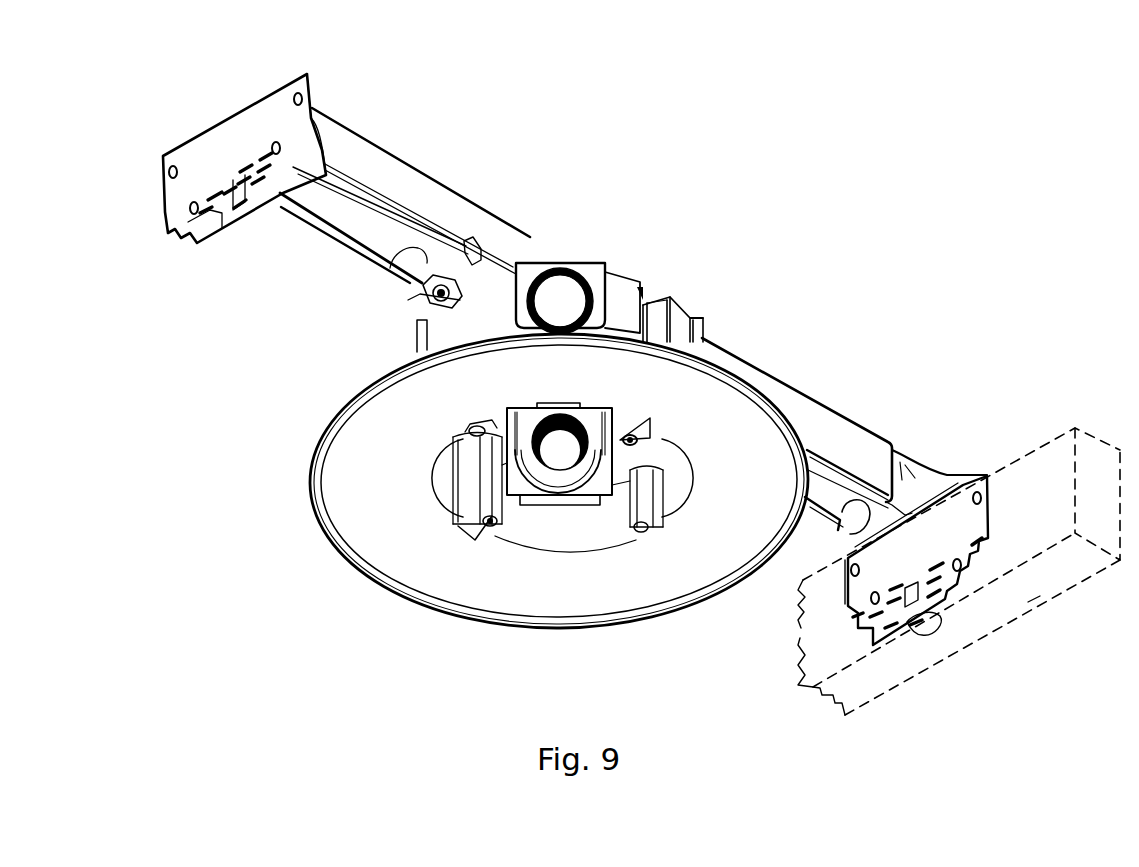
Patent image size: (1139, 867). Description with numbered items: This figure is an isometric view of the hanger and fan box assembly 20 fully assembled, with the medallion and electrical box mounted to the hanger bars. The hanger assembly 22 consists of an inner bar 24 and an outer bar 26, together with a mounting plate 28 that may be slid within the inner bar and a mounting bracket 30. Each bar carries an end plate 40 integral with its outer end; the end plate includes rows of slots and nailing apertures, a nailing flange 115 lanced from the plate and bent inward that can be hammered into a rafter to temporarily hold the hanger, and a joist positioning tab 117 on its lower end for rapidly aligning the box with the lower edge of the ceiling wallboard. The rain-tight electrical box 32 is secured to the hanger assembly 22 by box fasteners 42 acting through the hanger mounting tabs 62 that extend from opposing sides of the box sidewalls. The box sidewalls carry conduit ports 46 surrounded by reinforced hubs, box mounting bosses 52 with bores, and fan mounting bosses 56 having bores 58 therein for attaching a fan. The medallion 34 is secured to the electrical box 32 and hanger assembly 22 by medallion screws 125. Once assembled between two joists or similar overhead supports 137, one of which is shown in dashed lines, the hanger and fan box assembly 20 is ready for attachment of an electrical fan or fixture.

The hanger and fan box assembly 20 is at (100, 99).
The hanger assembly 22 is at (862, 428).
The inner bar 24 is at (807, 398).
The outer bar 26 is at (398, 160).
The mounting plate 28 is at (405, 279).
The mounting bracket 30 is at (487, 254).
The rain-tight electrical box 32 is at (685, 308).
The medallion 34 is at (310, 482).
The end plate 40 is at (243, 156).
The box fasteners 42 is at (430, 302).
The conduit ports 46 is at (556, 288).
The box mounting bosses 52 is at (492, 497).
The fan mounting bosses 56 is at (484, 419).
The bores 58 is at (642, 533).
The hanger mounting tabs 62 is at (425, 290).
The nailing flange 115 is at (907, 590).
The joist positioning tab 117 is at (923, 635).
The medallion screws 125 is at (493, 527).
The overhead supports 137 is at (1033, 599).